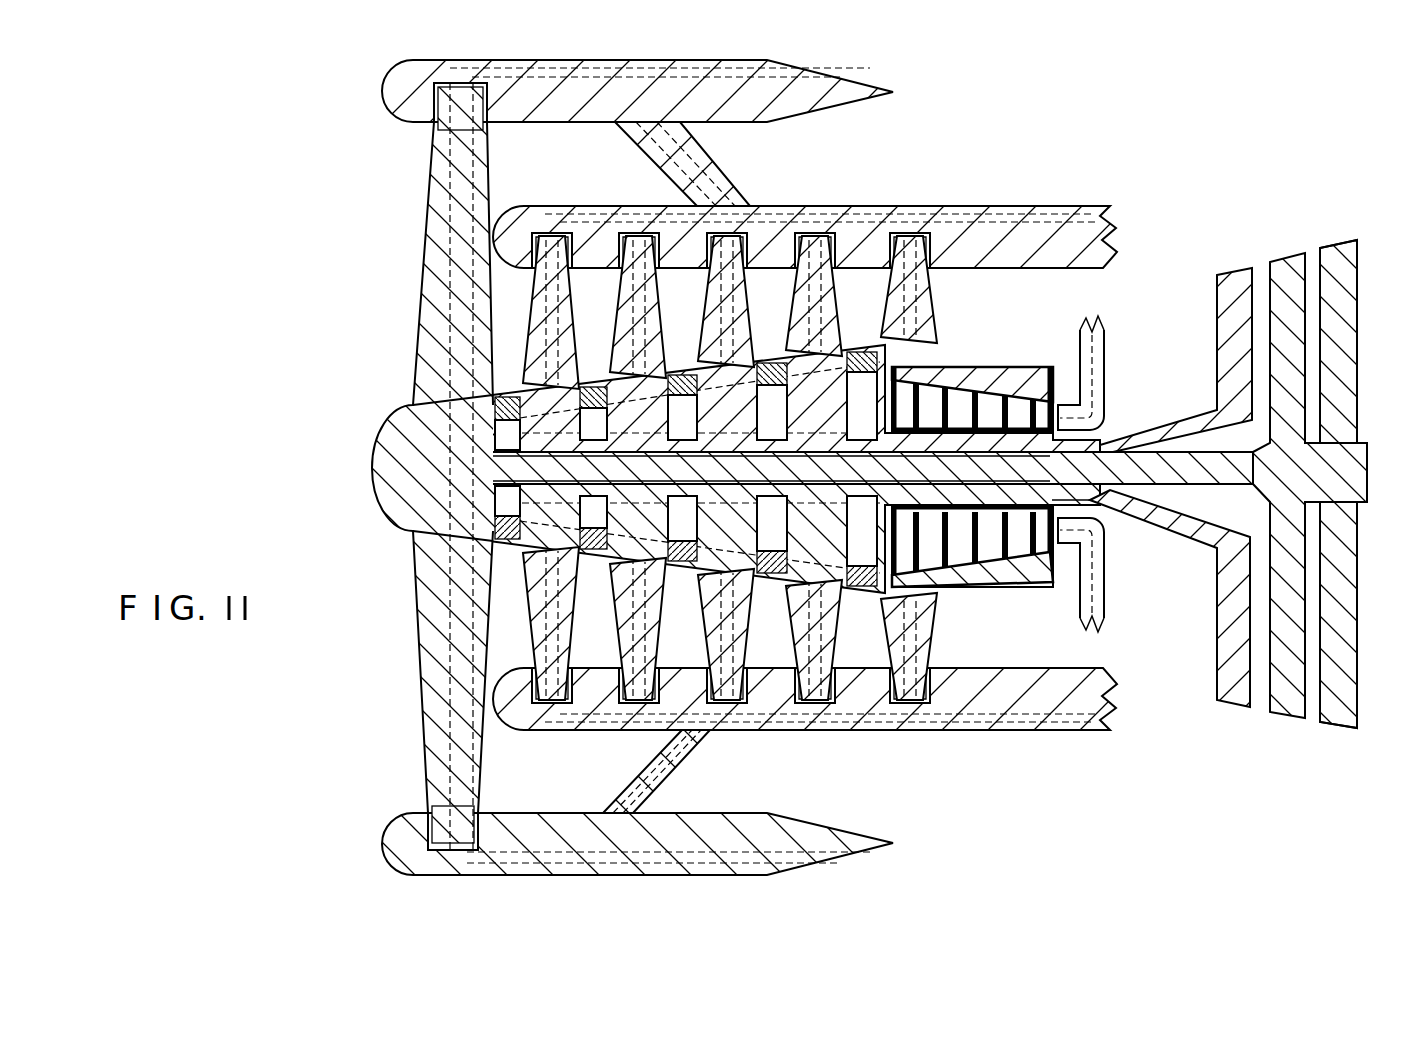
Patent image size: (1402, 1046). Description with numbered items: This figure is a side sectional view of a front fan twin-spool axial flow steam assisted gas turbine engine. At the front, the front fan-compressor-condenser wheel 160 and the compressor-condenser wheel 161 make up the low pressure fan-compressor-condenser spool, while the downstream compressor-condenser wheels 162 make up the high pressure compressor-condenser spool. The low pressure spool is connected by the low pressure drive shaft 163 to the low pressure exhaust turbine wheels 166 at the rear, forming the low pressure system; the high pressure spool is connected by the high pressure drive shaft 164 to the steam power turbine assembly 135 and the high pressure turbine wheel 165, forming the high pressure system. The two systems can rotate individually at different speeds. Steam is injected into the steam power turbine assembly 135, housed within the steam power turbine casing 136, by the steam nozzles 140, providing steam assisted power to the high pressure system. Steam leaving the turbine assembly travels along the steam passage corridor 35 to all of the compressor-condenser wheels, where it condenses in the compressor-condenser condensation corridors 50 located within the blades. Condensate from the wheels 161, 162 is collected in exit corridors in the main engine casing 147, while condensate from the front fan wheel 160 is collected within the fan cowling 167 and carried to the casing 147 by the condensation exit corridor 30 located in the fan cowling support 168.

The condensation exit corridor 30 is at (849, 466).
The steam passage corridor 35 is at (815, 390).
The compressor-condenser condensation corridors 50 is at (460, 350).
The steam power turbine assembly 135 is at (985, 540).
The steam power turbine casing 136 is at (1013, 580).
The steam drive nozzle 140 is at (1103, 330).
The engine casing 147 is at (1112, 210).
The front fan-compressor-condenser wheel 160 is at (455, 263).
The compressor-condenser wheel 161 is at (527, 610).
The compressor-condenser wheels 162 is at (802, 610).
The low pressure drive shaft 163 is at (737, 470).
The high pressure drive shaft 164 is at (1090, 500).
The high pressure turbine wheel 165 is at (1237, 705).
The low pressure exhaust turbine wheels 166 is at (1290, 718).
The fan cowling 167 is at (893, 92).
The fan cowling support 168 is at (660, 142).